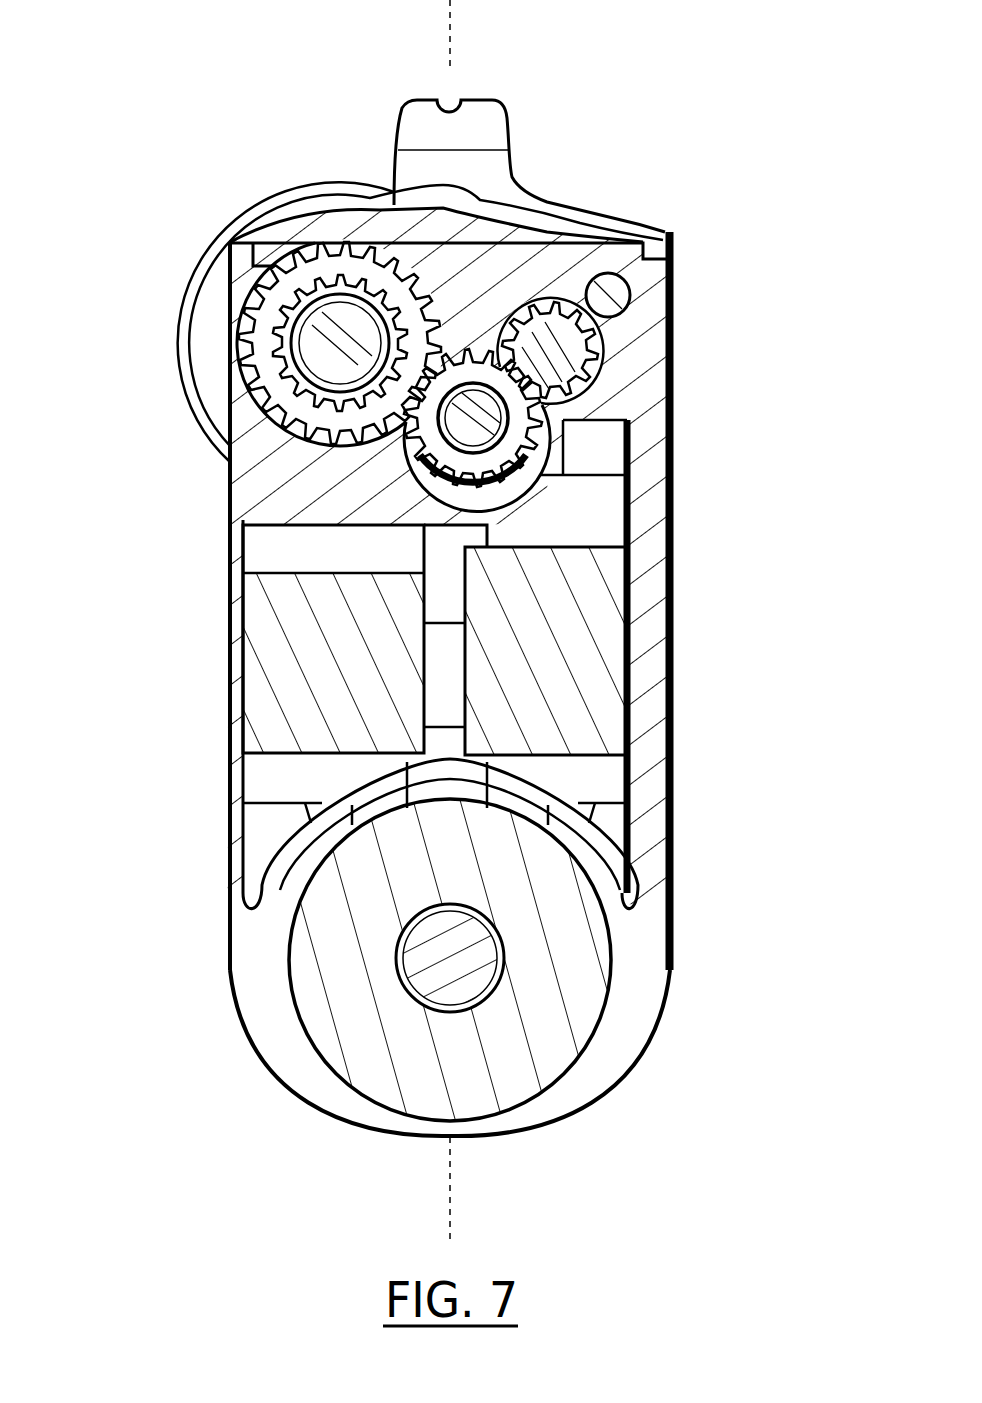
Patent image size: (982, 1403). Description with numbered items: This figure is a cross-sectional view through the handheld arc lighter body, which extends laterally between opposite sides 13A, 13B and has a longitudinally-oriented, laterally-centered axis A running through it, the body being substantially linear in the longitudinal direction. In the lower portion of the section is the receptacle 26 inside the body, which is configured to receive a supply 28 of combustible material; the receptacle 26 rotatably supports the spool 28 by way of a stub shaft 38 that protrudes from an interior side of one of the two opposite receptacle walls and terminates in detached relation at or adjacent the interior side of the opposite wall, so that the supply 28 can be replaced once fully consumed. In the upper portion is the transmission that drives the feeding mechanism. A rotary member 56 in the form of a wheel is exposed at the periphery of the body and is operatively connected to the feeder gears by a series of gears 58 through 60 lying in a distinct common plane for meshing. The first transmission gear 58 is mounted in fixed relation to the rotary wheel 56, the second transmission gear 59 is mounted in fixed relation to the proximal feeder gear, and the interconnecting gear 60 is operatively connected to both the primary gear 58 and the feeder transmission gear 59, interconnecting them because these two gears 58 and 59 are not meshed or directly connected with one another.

The axis A is at (452, 32).
The side of the body 13A is at (678, 833).
The side of the body 13B is at (222, 833).
The receptacle 26 is at (623, 958).
The supply of combustible material 28 is at (580, 1013).
The stub shaft 38 is at (453, 977).
The rotary member 56 is at (190, 290).
The first transmission gear 58 is at (262, 363).
The second transmission gear 59 is at (575, 343).
The interconnecting gear 60 is at (545, 457).